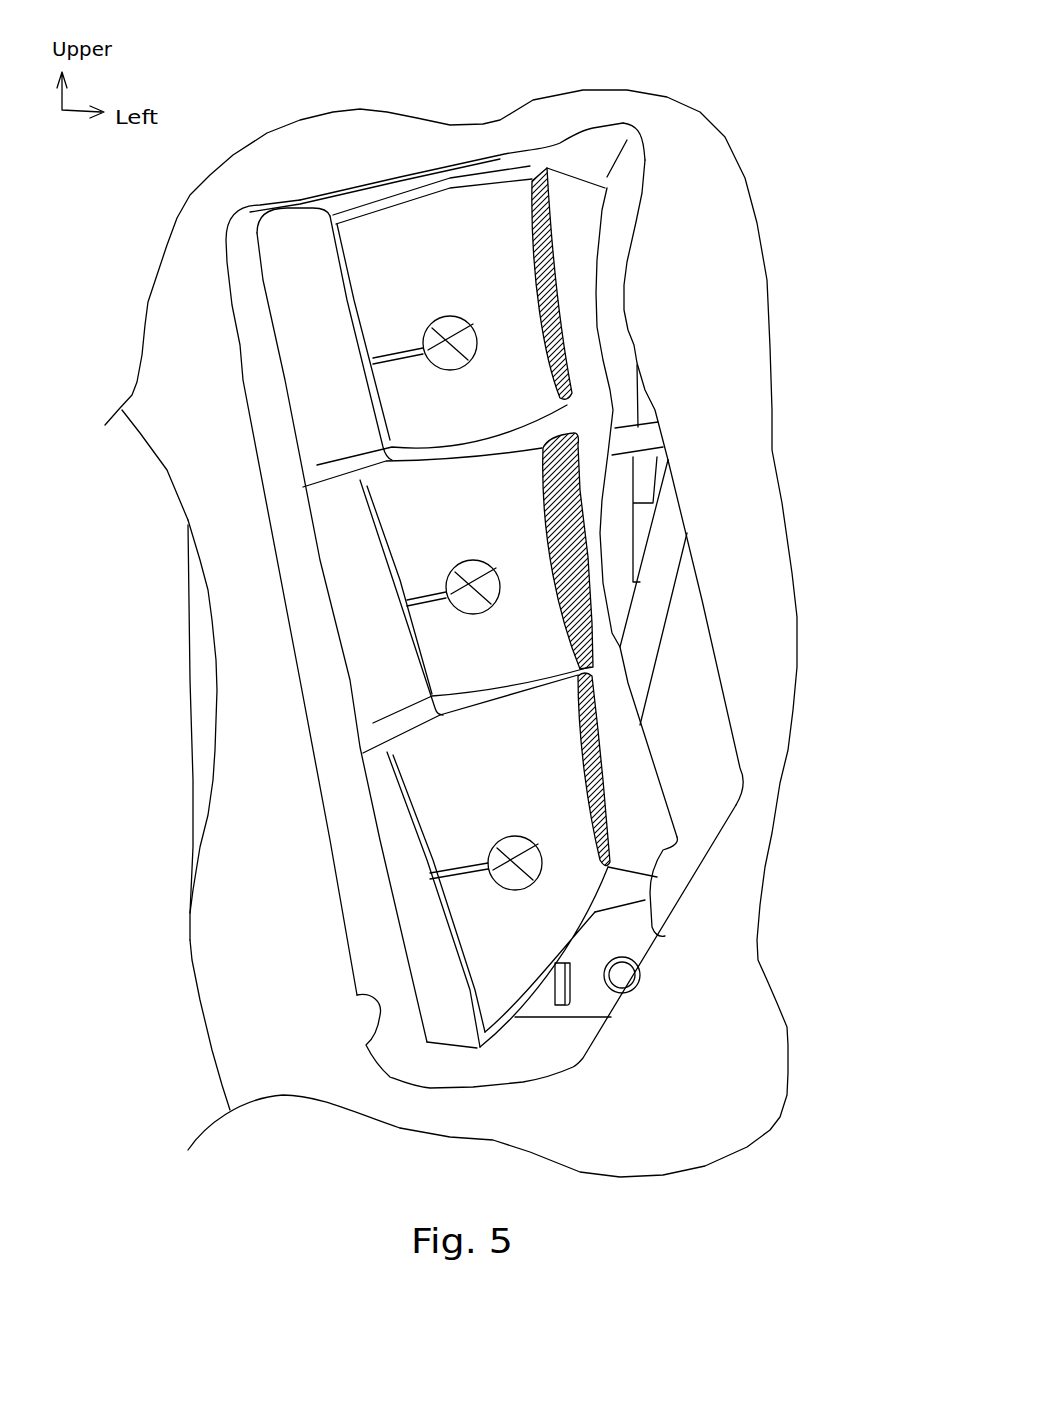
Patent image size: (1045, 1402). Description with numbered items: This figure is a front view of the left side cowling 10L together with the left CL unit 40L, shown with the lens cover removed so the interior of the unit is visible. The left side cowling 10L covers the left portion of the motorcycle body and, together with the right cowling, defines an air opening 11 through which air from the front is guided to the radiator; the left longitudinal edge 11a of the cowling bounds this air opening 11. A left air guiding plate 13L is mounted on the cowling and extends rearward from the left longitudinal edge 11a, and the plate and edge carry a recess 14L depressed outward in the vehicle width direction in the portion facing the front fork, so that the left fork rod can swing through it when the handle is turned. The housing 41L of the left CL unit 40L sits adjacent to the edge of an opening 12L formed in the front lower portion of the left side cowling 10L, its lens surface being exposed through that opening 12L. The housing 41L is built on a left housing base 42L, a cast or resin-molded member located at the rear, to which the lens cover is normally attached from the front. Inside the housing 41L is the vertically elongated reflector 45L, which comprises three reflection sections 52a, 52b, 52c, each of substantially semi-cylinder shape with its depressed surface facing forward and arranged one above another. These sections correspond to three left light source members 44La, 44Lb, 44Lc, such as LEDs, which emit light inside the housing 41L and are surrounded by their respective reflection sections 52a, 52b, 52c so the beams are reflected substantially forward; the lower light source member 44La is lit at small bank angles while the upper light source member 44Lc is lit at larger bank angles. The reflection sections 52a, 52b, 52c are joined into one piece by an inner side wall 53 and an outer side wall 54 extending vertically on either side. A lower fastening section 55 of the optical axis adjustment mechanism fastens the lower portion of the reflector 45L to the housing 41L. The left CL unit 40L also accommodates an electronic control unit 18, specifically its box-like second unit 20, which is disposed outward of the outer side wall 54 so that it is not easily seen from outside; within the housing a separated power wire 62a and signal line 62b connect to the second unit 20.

The left side cowling 10L is at (225, 1027).
The air opening 11 is at (177, 828).
The left longitudinal edge 11a is at (223, 548).
The opening 12L is at (366, 1045).
The left air guiding plate 13L is at (190, 613).
The recess 14L is at (190, 678).
The electronic control unit 18 is at (799, 631).
The second unit 20 is at (688, 568).
The left CL unit 40L is at (614, 226).
The housing 41L is at (336, 541).
The left housing base 42L is at (238, 243).
The left light source member 44La is at (518, 835).
The left light source member 44Lb is at (493, 573).
The left light source member 44Lc is at (467, 333).
The reflector 45L is at (500, 173).
The reflection section 52a is at (487, 772).
The reflection section 52b is at (462, 511).
The reflection section 52c is at (437, 269).
The inner side wall 53 is at (447, 1027).
The outer side wall 54 is at (570, 192).
The lower fastening section 55 is at (627, 977).
The power wire 62a is at (652, 617).
The signal line 62b is at (643, 433).